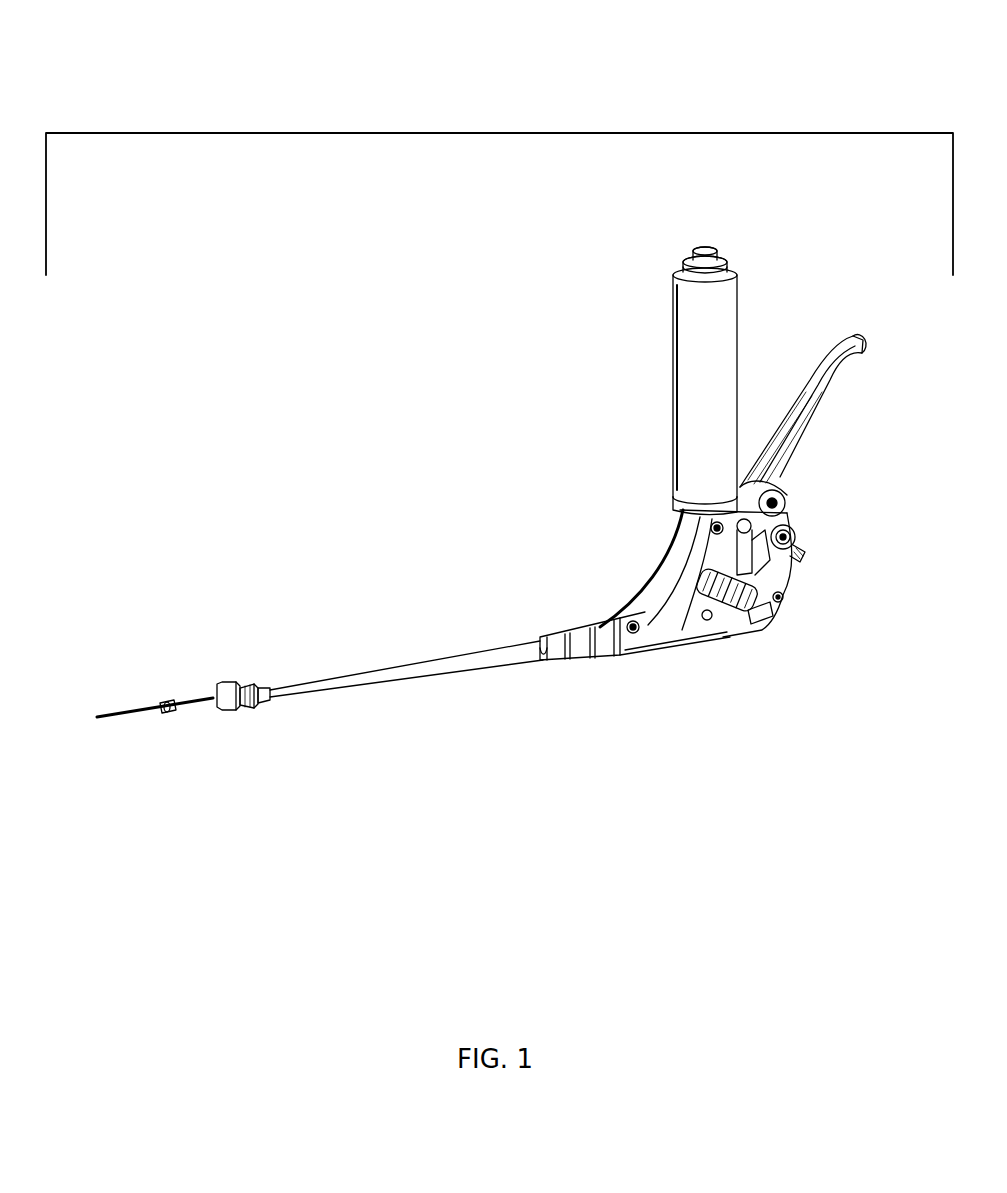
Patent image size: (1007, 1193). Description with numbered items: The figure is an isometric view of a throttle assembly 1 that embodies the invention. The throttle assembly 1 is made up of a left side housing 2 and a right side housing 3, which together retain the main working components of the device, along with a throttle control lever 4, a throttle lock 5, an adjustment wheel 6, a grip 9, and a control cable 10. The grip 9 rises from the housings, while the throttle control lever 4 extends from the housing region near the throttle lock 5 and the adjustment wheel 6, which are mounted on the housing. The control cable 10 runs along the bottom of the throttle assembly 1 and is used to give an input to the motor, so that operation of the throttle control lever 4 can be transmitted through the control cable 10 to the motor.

The throttle assembly 1 is at (460, 132).
The left side housing 2 is at (666, 549).
The right side housing 3 is at (655, 655).
The throttle control lever 4 is at (831, 392).
The throttle lock 5 is at (811, 556).
The adjustment wheel 6 is at (730, 637).
The grip 9 is at (667, 271).
The control cable 10 is at (145, 696).